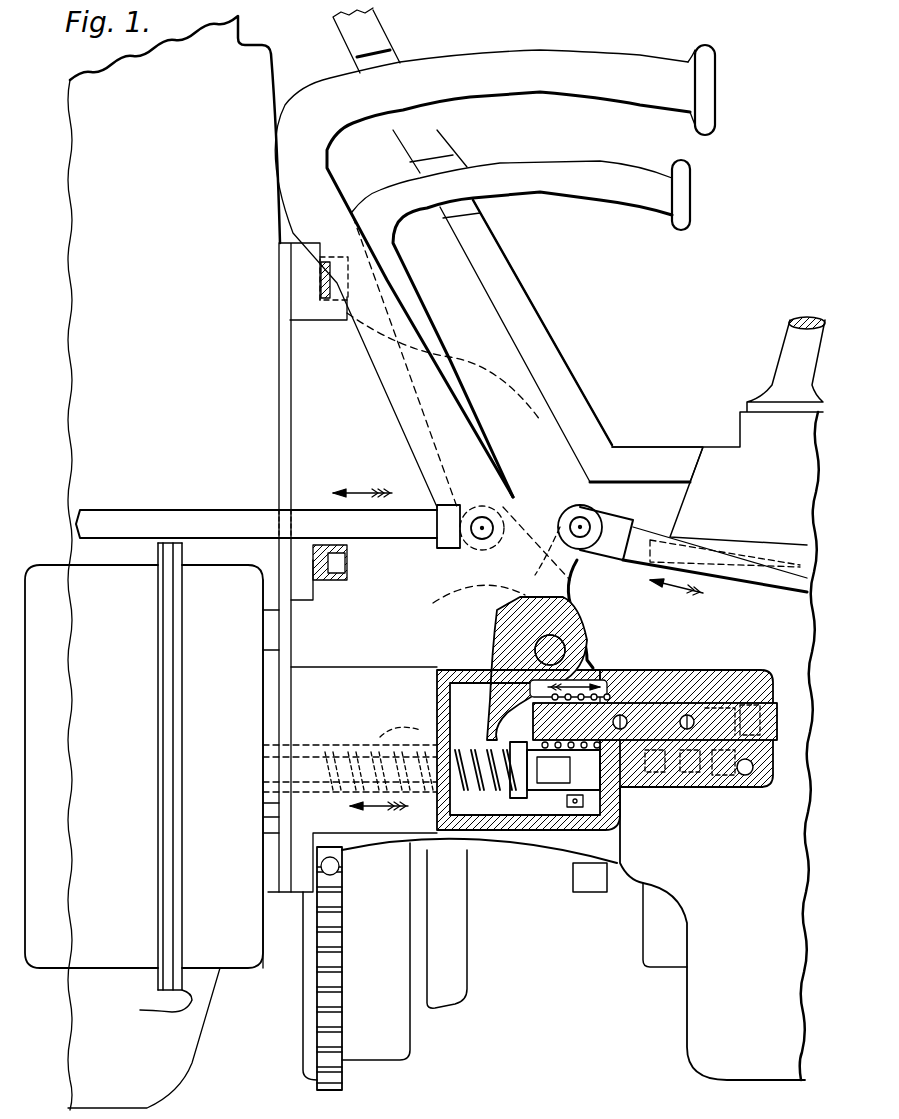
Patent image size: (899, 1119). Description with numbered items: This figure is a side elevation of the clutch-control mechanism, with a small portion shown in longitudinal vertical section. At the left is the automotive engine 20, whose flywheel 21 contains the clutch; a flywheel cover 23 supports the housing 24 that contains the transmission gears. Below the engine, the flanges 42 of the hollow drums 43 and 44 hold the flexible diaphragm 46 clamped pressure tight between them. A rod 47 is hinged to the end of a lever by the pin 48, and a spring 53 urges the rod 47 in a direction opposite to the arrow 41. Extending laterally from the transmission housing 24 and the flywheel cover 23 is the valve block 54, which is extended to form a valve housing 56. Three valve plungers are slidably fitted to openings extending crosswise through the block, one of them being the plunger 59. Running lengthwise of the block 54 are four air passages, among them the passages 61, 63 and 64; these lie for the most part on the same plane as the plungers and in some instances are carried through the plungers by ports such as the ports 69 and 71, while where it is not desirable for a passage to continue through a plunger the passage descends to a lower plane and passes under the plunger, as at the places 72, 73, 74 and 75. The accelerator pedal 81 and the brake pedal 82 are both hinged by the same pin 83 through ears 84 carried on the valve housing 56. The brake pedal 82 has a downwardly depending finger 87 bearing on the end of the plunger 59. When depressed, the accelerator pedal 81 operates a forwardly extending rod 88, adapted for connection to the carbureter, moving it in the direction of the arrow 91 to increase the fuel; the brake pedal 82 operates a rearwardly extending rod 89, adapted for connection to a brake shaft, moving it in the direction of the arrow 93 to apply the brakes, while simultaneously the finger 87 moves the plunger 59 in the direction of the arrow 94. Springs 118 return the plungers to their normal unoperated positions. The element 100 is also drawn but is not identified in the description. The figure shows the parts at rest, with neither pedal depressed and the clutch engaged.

The automotive engine 20 is at (100, 130).
The flywheel 21 is at (390, 1043).
The flywheel cover 23 is at (487, 417).
The housing 24 is at (720, 993).
The arrow 41 is at (376, 817).
The flanges 42 is at (160, 993).
The hollow drum 43 is at (72, 952).
The hollow drum 44 is at (238, 958).
The flexible diaphragm 46 is at (170, 893).
The rod 47 is at (350, 752).
The pin 48 is at (530, 840).
The spring 53 is at (404, 724).
The valve block 54 is at (722, 690).
The valve housing 56 is at (523, 832).
The valve plunger 59 is at (773, 733).
The air passage 61 is at (652, 703).
The air passage 63 is at (753, 693).
The air passage 64 is at (783, 680).
The port 69 is at (618, 714).
The port 71 is at (686, 714).
The passage under plunger 72 is at (645, 735).
The passage under plunger 73 is at (690, 787).
The passage under plunger 74 is at (713, 750).
The passage under plunger 75 is at (746, 778).
The accelerator pedal 81 is at (552, 182).
The brake pedal 82 is at (557, 82).
The pin 83 is at (548, 650).
The ears 84 is at (458, 472).
The finger 87 is at (503, 733).
The rod 88 is at (123, 518).
The rod 89 is at (770, 585).
The arrow 91 is at (362, 479).
The arrow 93 is at (671, 598).
The arrow 94 is at (593, 668).
The bracket 100 is at (593, 880).
The springs 118 is at (545, 778).